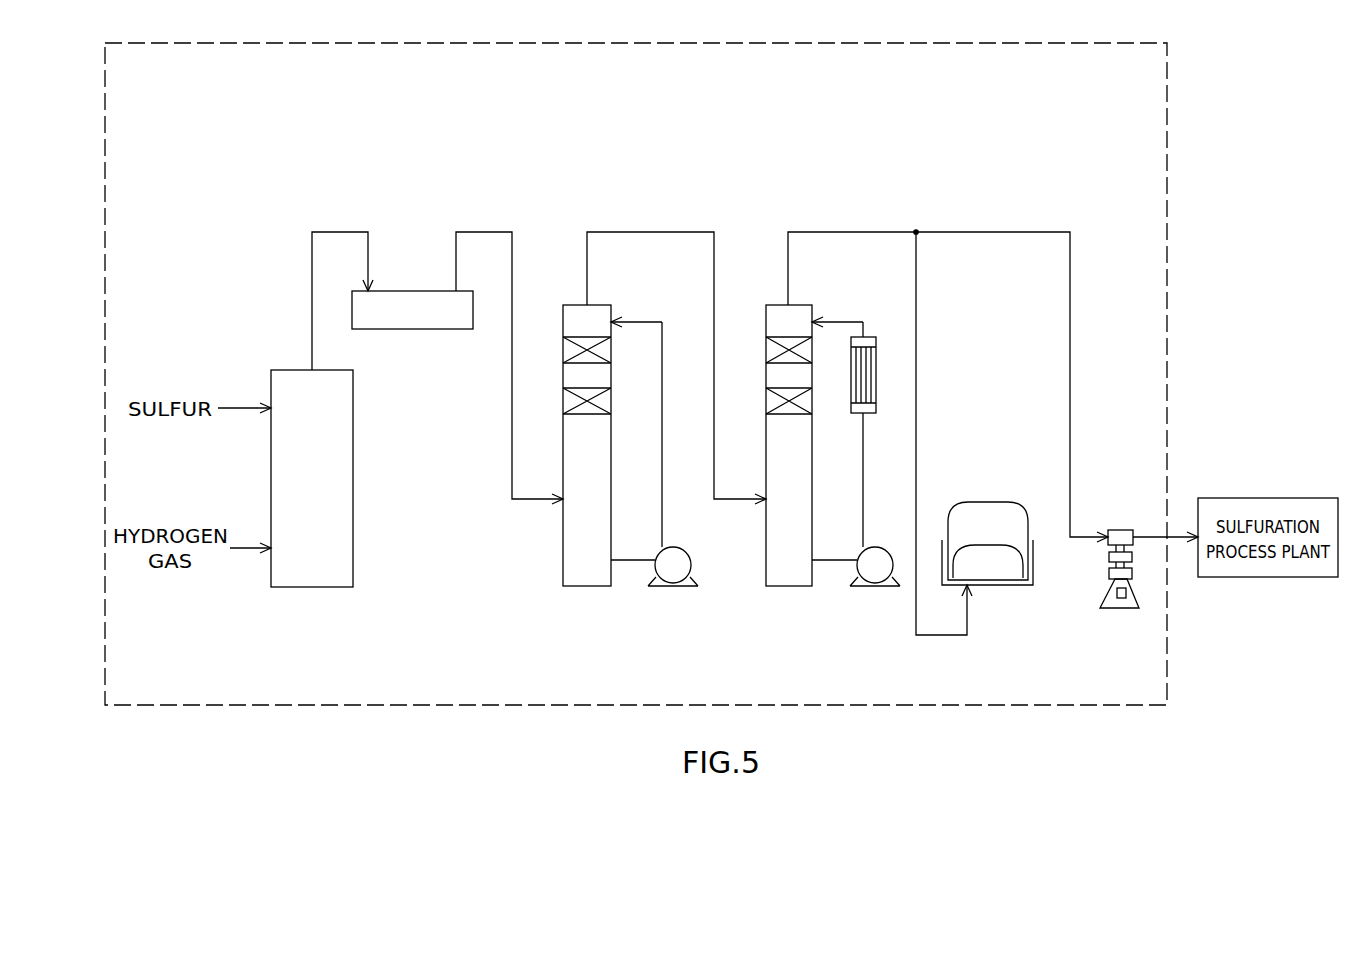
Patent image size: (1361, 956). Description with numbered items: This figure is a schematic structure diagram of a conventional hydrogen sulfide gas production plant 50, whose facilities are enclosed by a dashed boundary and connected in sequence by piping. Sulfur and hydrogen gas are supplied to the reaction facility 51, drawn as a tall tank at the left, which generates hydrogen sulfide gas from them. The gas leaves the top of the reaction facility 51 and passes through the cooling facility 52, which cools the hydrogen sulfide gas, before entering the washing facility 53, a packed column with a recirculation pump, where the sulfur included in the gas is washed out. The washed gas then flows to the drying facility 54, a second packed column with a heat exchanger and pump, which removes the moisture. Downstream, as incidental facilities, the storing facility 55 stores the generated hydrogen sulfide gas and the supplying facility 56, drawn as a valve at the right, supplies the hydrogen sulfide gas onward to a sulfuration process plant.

The hydrogen sulfide gas production plant 50 is at (686, 93).
The reaction facility 51 is at (355, 530).
The cooling facility 52 is at (413, 291).
The washing facility 53 is at (630, 590).
The drying facility 54 is at (832, 590).
The storing facility 55 is at (988, 502).
The supplying facility 56 is at (1120, 530).